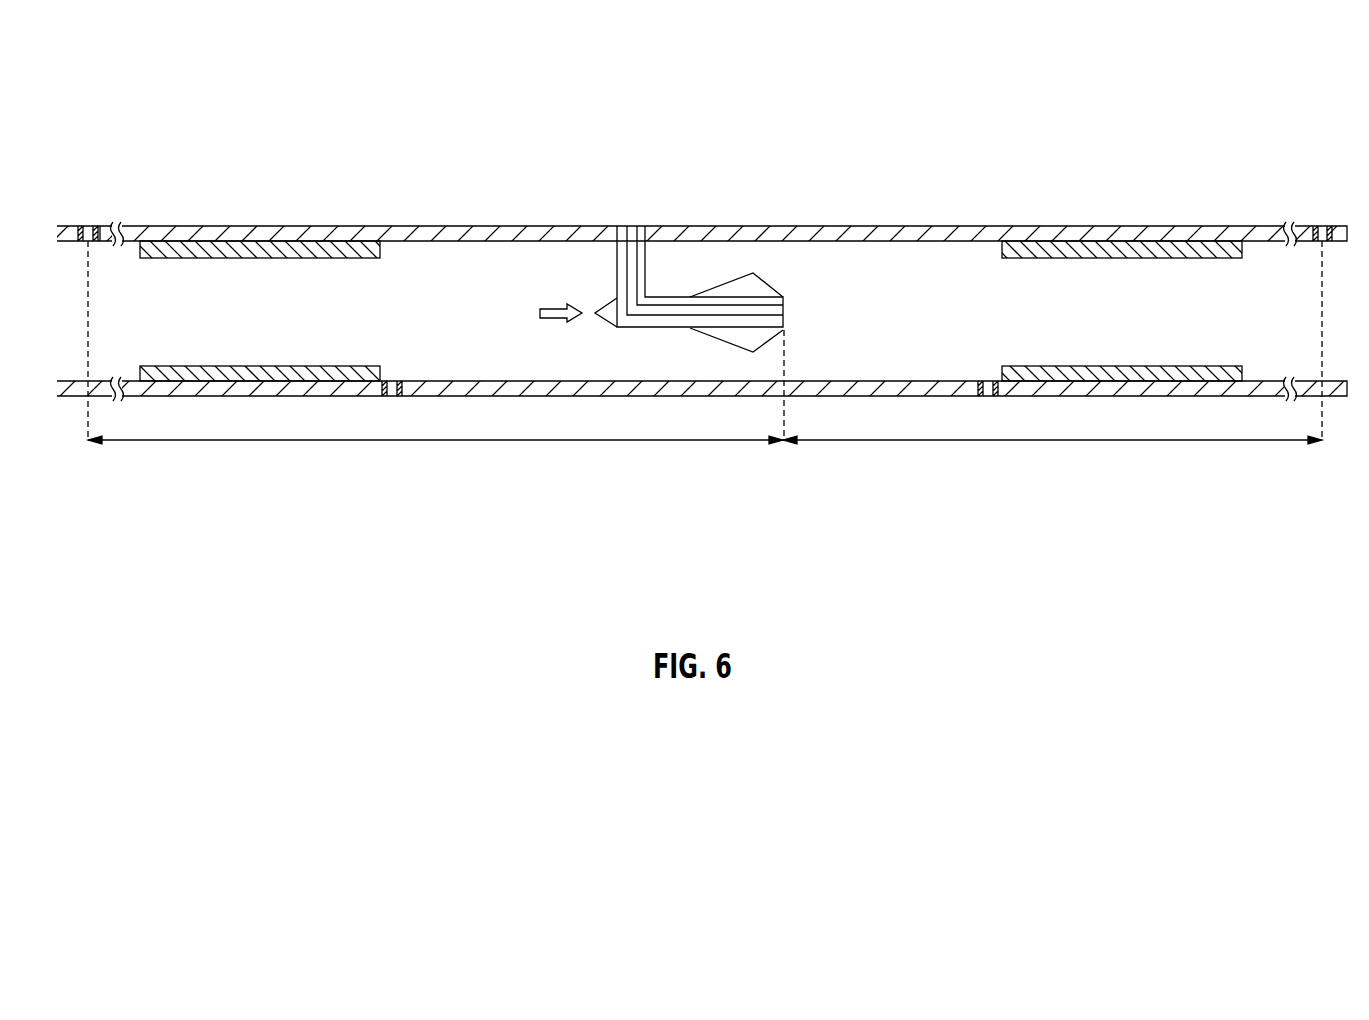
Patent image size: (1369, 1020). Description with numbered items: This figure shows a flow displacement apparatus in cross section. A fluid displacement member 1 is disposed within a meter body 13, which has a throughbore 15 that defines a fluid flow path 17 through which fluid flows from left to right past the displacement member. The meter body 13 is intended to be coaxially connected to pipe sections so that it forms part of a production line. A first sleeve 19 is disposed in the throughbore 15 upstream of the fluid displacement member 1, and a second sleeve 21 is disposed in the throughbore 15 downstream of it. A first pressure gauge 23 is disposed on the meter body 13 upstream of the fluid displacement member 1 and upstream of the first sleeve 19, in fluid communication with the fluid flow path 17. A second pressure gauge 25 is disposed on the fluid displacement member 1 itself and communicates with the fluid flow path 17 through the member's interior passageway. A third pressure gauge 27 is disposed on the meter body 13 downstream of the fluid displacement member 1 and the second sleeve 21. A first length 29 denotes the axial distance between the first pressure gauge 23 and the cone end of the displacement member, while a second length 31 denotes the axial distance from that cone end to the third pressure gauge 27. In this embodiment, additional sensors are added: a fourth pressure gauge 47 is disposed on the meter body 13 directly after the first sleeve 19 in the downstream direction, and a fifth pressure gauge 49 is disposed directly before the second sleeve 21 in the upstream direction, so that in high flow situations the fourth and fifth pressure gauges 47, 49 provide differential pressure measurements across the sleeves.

The fluid displacement member 1 is at (723, 340).
The meter body 13 is at (487, 226).
The throughbore 15 is at (893, 355).
The fluid flow path 17 is at (547, 308).
The first sleeve 19 is at (328, 247).
The second sleeve 21 is at (1102, 248).
The first pressure gauge 23 is at (88, 226).
The second pressure gauge 25 is at (630, 226).
The third pressure gauge 27 is at (1317, 226).
The first length 29 is at (420, 441).
The second length 31 is at (1083, 441).
The fourth pressure gauge 47 is at (392, 396).
The fifth pressure gauge 49 is at (988, 396).